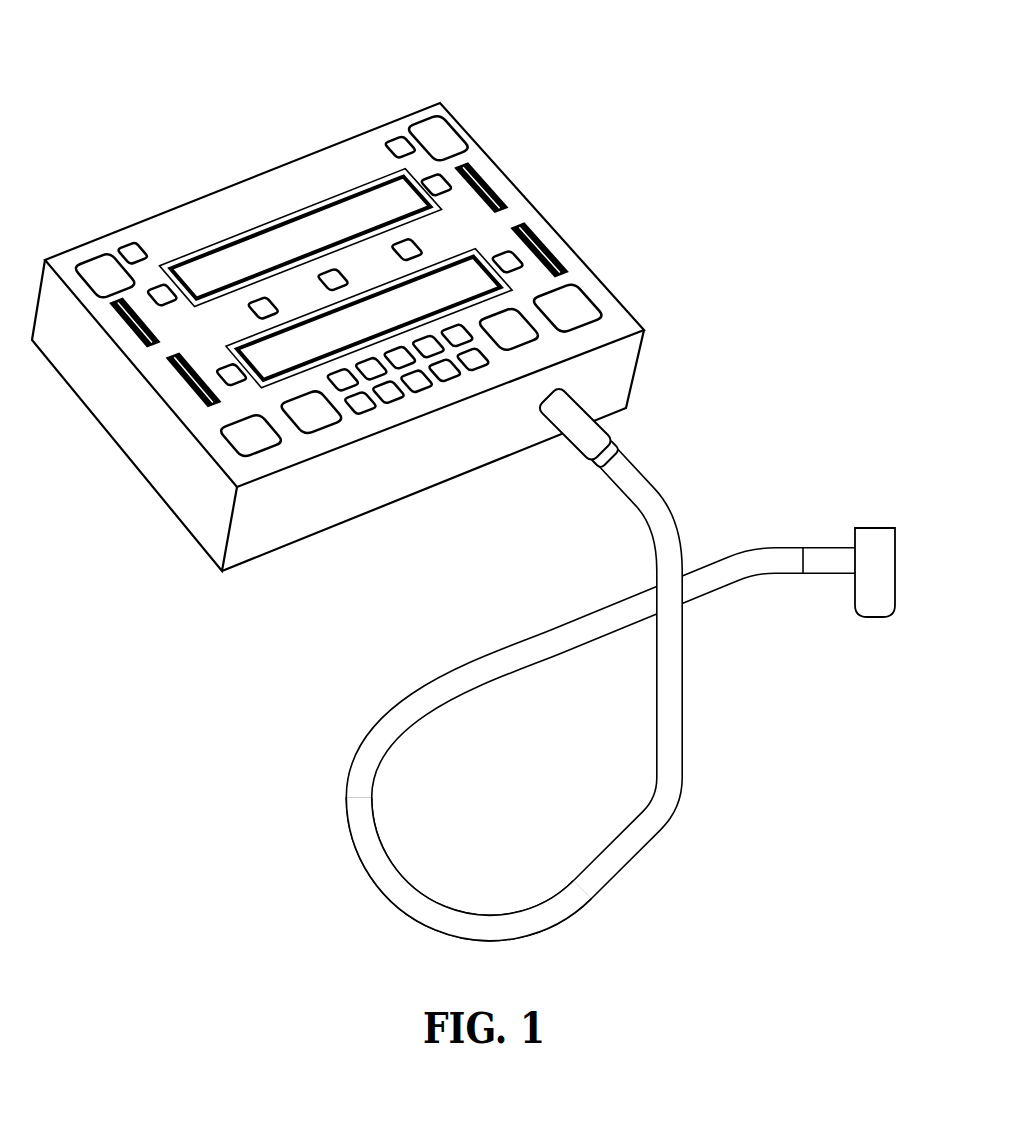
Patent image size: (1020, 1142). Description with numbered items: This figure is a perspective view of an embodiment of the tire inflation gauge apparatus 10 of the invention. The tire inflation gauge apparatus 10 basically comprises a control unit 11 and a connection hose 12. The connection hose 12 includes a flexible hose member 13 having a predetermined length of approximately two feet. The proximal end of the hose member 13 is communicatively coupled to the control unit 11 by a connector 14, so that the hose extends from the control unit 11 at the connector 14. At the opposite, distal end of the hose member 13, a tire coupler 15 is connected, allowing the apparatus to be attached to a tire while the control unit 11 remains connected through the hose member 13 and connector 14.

The tire inflation gauge apparatus 10 is at (463, 487).
The control unit 11 is at (167, 203).
The connection hose 12 is at (601, 710).
The flexible hose member 13 is at (378, 893).
The connector 14 is at (622, 433).
The tire coupler 15 is at (835, 587).